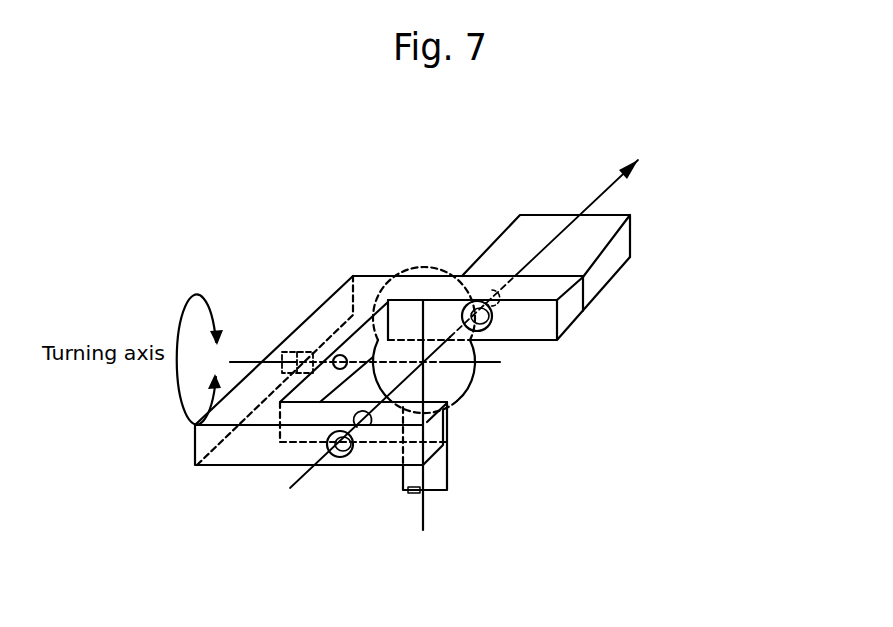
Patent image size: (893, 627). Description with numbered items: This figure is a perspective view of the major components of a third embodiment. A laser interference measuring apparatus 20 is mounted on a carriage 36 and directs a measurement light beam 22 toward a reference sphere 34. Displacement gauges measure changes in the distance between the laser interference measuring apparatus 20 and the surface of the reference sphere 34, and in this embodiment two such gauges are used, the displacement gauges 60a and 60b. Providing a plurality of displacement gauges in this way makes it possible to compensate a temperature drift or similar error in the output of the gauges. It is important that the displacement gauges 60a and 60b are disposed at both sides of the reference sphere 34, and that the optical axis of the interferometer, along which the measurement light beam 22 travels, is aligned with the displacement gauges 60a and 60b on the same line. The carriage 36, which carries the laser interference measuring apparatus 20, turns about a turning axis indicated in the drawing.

The carriage 36 is at (410, 285).
The laser interference measuring apparatus 20 is at (610, 252).
The measurement light beam 22 is at (640, 167).
The reference sphere 34 is at (456, 372).
The displacement gauge 60a is at (490, 327).
The displacement gauge 60b is at (353, 447).